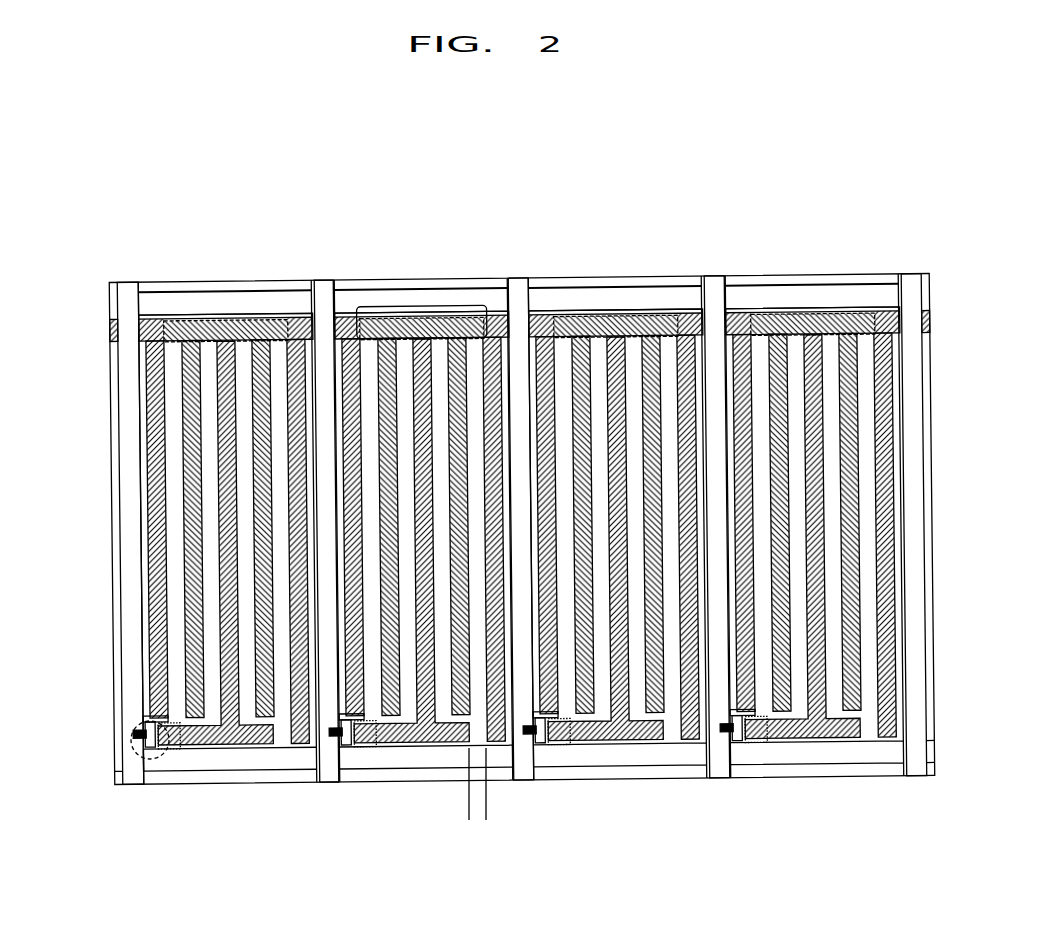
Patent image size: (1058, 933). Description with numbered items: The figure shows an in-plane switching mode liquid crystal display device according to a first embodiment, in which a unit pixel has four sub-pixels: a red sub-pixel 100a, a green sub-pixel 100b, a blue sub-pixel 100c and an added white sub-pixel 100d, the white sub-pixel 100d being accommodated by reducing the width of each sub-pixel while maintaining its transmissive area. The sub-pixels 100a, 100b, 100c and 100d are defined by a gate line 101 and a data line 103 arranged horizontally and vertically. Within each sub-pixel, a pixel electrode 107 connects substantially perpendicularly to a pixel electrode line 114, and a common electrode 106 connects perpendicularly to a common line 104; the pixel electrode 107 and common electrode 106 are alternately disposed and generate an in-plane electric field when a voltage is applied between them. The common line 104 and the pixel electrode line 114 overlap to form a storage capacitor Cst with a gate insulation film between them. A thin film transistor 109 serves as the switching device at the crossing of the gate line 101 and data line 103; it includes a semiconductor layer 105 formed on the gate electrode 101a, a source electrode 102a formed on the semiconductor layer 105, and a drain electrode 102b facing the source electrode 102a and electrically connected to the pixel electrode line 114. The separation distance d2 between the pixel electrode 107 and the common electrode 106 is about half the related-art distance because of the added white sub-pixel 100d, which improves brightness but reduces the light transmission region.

The red sub-pixel 100a is at (219, 862).
The green sub-pixel 100b is at (424, 862).
The blue sub-pixel 100c is at (627, 862).
The white sub-pixel 100d is at (834, 862).
The gate line 101 is at (262, 762).
The gate electrode 101a is at (143, 718).
The source electrode 102a is at (138, 735).
The drain electrode 102b is at (176, 746).
The data line 103 is at (126, 596).
The common line 104 is at (112, 331).
The semiconductor layer 105 is at (158, 748).
The common electrode 106 is at (223, 340).
The pixel electrode 107 is at (185, 340).
The thin film transistor 109 is at (121, 757).
The pixel electrode line 114 is at (270, 330).
The storage capacitor Cst is at (420, 305).
The separation distance d2 is at (433, 817).